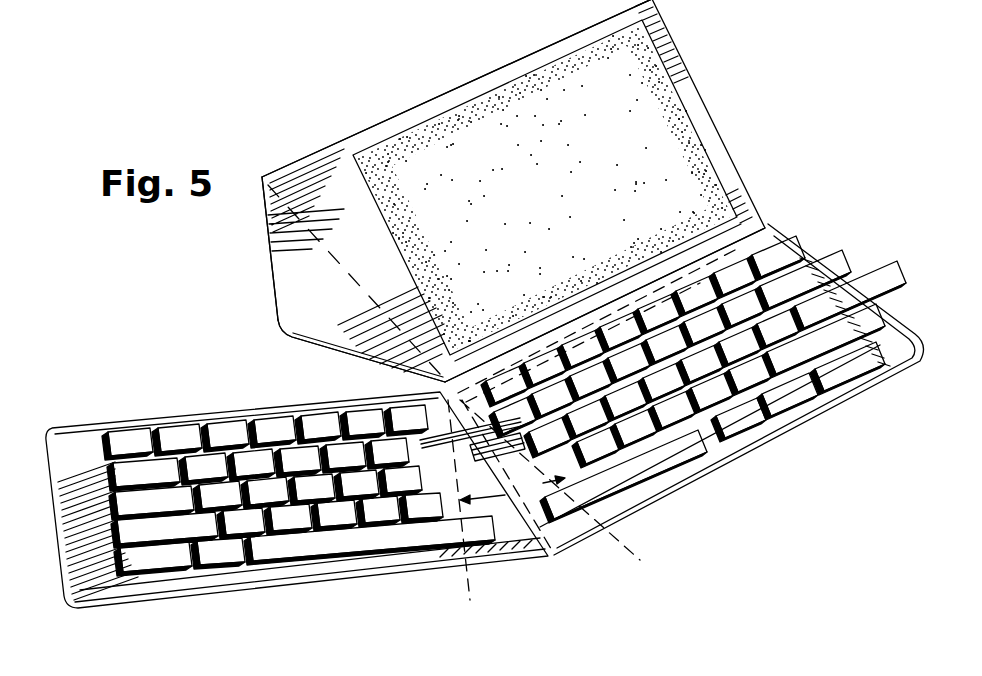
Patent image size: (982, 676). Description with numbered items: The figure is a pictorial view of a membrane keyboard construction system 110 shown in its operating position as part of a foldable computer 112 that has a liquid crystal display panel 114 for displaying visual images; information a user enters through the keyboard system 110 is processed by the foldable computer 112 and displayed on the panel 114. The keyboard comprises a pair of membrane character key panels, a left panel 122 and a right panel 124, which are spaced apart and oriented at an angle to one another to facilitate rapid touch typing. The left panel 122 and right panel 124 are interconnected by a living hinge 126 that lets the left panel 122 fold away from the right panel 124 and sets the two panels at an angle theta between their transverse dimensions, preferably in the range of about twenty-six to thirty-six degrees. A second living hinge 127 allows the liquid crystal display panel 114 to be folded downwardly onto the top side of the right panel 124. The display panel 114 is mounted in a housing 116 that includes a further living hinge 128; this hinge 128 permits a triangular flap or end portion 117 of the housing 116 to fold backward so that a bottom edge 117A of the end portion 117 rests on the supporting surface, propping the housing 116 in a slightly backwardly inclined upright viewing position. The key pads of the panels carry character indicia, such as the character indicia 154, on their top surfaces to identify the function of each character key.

The membrane keyboard construction system 110 is at (187, 616).
The foldable computer 112 is at (770, 188).
The liquid crystal display panel 114 is at (662, 132).
The housing 116 is at (418, 92).
The triangular flap or end portion 117 is at (288, 301).
The bottom edge 117A is at (355, 357).
The left panel 122 is at (332, 580).
The right panel 124 is at (739, 453).
The living hinge 126 is at (548, 556).
The living hinge 127 is at (767, 230).
The living hinge 128 is at (303, 208).
The character indicia 154 is at (226, 424).